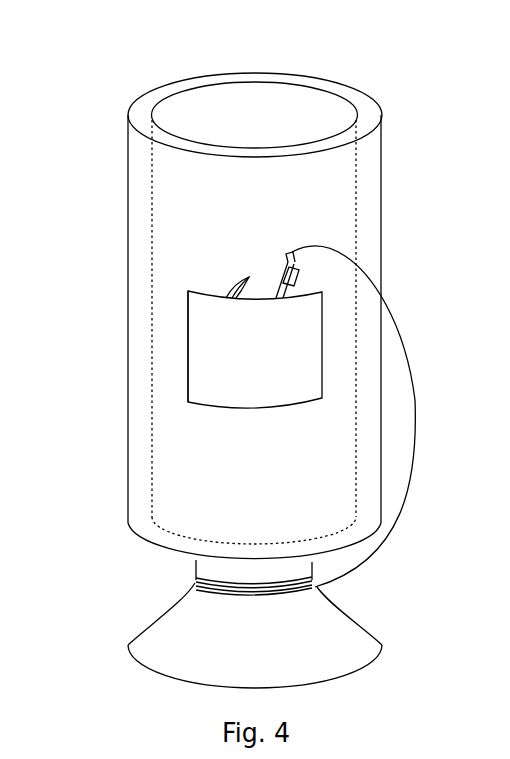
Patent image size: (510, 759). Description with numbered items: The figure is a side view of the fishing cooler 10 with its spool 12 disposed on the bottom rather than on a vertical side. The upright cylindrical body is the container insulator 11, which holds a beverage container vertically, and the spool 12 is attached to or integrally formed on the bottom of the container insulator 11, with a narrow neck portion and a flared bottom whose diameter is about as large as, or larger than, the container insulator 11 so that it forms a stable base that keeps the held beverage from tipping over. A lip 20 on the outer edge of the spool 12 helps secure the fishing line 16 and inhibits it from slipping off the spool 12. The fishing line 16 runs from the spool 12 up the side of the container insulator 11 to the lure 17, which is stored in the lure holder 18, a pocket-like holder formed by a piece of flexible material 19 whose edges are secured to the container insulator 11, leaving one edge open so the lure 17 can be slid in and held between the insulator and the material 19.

The fishing cooler 10 is at (100, 50).
The container insulator 11 is at (368, 110).
The spool 12 is at (196, 582).
The fishing line 16 is at (418, 437).
The lure 17 is at (238, 282).
The lure holder 18 is at (186, 345).
The material 19 is at (190, 383).
The lip 20 is at (350, 637).